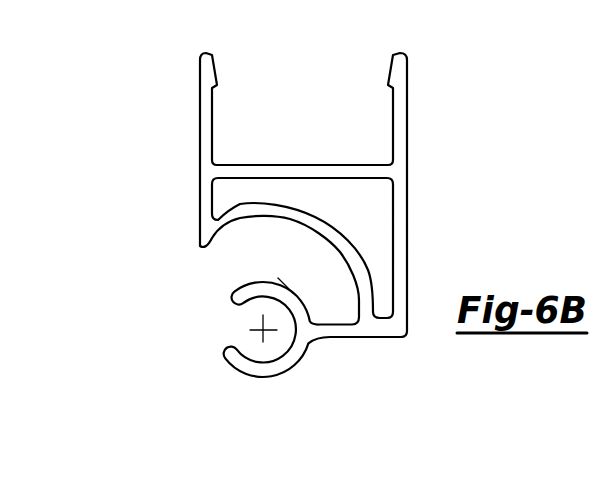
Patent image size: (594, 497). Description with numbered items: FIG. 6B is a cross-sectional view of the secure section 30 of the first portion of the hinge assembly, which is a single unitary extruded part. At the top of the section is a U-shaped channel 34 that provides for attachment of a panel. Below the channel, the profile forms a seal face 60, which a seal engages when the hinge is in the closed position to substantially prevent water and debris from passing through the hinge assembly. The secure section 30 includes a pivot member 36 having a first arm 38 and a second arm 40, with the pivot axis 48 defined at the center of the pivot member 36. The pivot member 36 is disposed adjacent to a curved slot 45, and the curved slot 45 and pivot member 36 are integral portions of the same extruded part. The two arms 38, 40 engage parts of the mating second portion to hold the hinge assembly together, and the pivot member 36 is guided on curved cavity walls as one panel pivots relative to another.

The secure section 30 is at (197, 257).
The U-shaped channel 34 is at (310, 128).
The seal face 60 is at (214, 243).
The curved slot 45 is at (285, 243).
The first arm 38 is at (236, 298).
The second arm 40 is at (239, 364).
The pivot axis 48 is at (264, 332).
The pivot member 36 is at (277, 373).